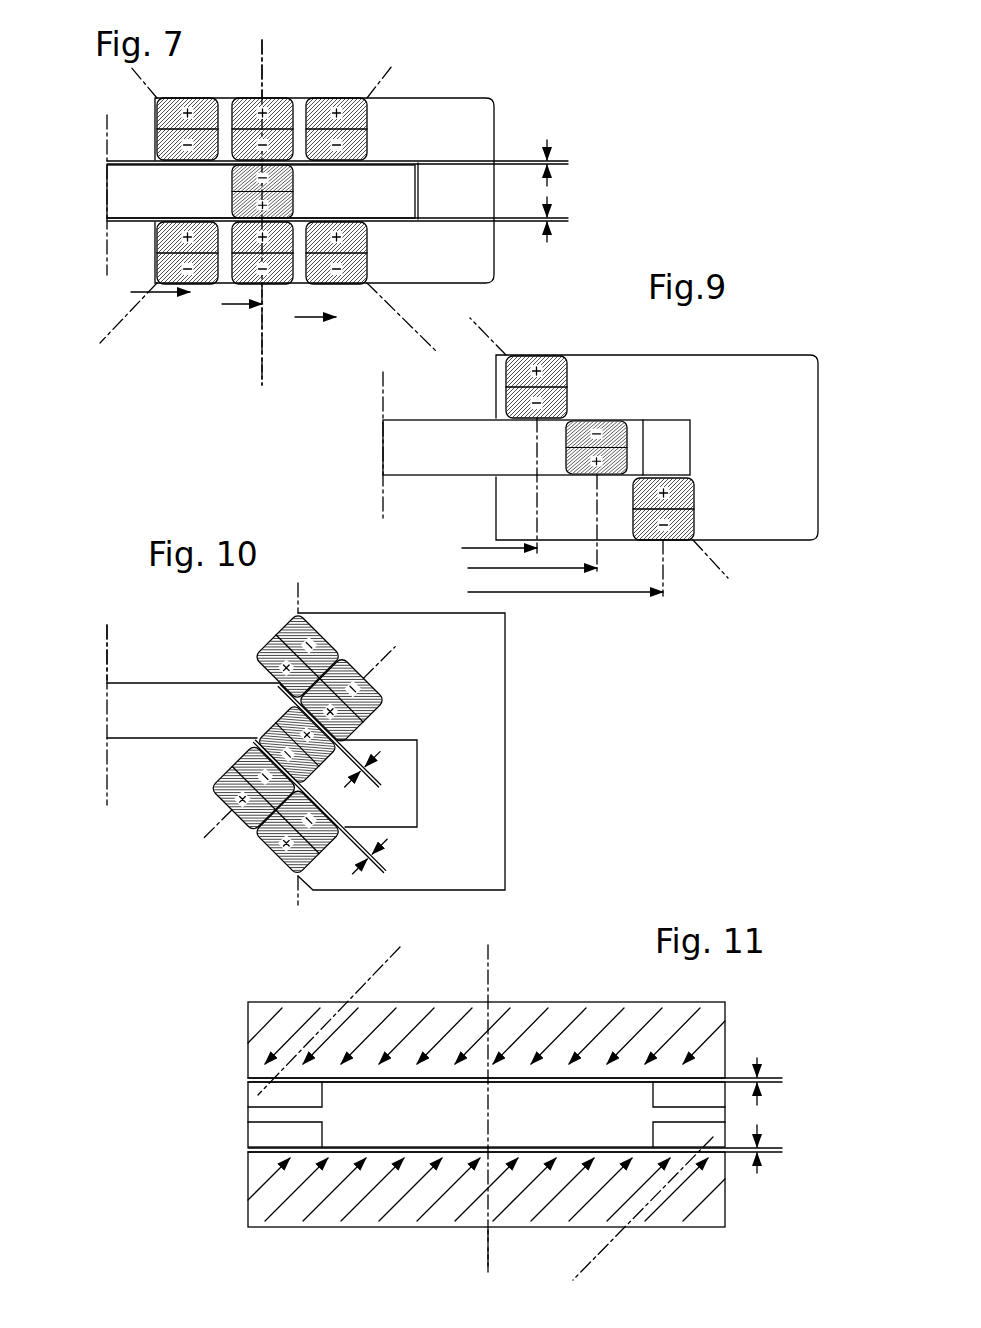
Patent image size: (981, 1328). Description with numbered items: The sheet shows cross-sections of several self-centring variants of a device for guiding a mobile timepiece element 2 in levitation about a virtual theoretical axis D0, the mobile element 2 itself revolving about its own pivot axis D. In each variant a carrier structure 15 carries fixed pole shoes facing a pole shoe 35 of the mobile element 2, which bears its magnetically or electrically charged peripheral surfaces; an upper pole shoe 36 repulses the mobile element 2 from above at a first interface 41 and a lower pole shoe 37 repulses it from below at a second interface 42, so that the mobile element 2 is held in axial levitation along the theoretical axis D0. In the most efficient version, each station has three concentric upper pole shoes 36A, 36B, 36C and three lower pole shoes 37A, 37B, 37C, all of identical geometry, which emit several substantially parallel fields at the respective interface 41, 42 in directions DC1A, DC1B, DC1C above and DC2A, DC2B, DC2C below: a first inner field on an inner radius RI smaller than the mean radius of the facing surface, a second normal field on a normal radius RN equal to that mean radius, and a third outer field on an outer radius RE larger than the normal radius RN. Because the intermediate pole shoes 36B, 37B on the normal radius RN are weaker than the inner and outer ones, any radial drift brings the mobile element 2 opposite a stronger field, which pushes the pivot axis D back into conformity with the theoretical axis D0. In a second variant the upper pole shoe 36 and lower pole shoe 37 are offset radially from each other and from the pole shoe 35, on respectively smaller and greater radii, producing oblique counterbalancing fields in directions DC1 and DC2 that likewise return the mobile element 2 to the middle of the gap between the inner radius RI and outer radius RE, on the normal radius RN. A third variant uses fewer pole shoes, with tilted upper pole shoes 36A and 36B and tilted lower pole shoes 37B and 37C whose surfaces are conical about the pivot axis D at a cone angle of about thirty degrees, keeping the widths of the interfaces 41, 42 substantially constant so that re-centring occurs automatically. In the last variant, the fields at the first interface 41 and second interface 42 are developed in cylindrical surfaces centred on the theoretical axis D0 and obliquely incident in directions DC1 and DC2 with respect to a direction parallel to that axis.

In FIG. 7, the mobile timepiece element 2 is at (337, 191).
In FIG. 9, the mobile timepiece element 2 is at (405, 462).
In FIG. 10, the mobile timepiece element 2 is at (137, 704).
In FIG. 11, the mobile timepiece element 2 is at (515, 1115).
In FIG. 7, the carrier structure 15 is at (487, 260).
In FIG. 9, the carrier structure 15 is at (735, 365).
In FIG. 10, the carrier structure 15 is at (506, 795).
In FIG. 7, the pole shoe 35 is at (262, 190).
In FIG. 9, the pole shoe 35 is at (600, 445).
In FIG. 10, the pole shoe 35 is at (290, 743).
In FIG. 9, the upper pole shoe 36 is at (570, 375).
In FIG. 11, the upper pole shoe 36 is at (486, 1040).
In FIG. 7, the upper pole shoe 36A is at (178, 131).
In FIG. 10, the upper pole shoe 36A is at (283, 658).
In FIG. 7, the upper pole shoe 36B is at (262, 130).
In FIG. 10, the upper pole shoe 36B is at (352, 690).
In FIG. 7, the upper pole shoe 36C is at (340, 138).
In FIG. 9, the lower pole shoe 37 is at (663, 505).
In FIG. 11, the lower pole shoe 37 is at (486, 1189).
In FIG. 7, the lower pole shoe 37A is at (190, 252).
In FIG. 7, the lower pole shoe 37B is at (262, 254).
In FIG. 10, the lower pole shoe 37B is at (257, 787).
In FIG. 7, the lower pole shoe 37C is at (340, 265).
In FIG. 10, the lower pole shoe 37C is at (303, 832).
In FIG. 7, the first interface 41 is at (566, 159).
In FIG. 10, the first interface 41 is at (362, 781).
In FIG. 11, the first interface 41 is at (761, 1068).
In FIG. 7, the second interface 42 is at (566, 224).
In FIG. 10, the second interface 42 is at (380, 856).
In FIG. 11, the second interface 42 is at (761, 1166).
In FIG. 7, the theoretical axis D0 is at (106, 202).
In FIG. 9, the theoretical axis D0 is at (382, 447).
In FIG. 10, the theoretical axis D0 is at (106, 768).
In FIG. 11, the theoretical axis D0 is at (486, 1265).
In FIG. 10, the pivot axis D is at (110, 657).
In FIG. 11, the pivot axis D is at (492, 972).
In FIG. 9, the direction of the first field DC1 is at (484, 331).
In FIG. 11, the direction of the first field DC1 is at (390, 963).
In FIG. 7, the direction of the first field of pole shoe 36A DC1A is at (136, 78).
In FIG. 10, the direction of the first field of pole shoe 36A DC1A is at (293, 594).
In FIG. 7, the direction of the first field of pole shoe 36B DC1B is at (266, 57).
In FIG. 10, the direction of the first field of pole shoe 36B DC1B is at (393, 656).
In FIG. 7, the direction of the first field of pole shoe 36C DC1C is at (388, 75).
In FIG. 9, the direction of the second field DC2 is at (722, 566).
In FIG. 11, the direction of the second field DC2 is at (592, 1270).
In FIG. 7, the direction of the second field of pole shoe 37A DC2A is at (125, 317).
In FIG. 7, the direction of the second field of pole shoe 37B DC2B is at (262, 358).
In FIG. 10, the direction of the second field of pole shoe 37B DC2B is at (212, 825).
In FIG. 7, the direction of the second field of pole shoe 37C DC2C is at (393, 326).
In FIG. 10, the direction of the second field of pole shoe 37C DC2C is at (295, 893).
In FIG. 7, the inner radius RI is at (147, 292).
In FIG. 9, the inner radius RI is at (486, 547).
In FIG. 7, the normal radius RN is at (226, 304).
In FIG. 9, the normal radius RN is at (515, 567).
In FIG. 7, the outer radius RE is at (300, 317).
In FIG. 9, the outer radius RE is at (548, 591).